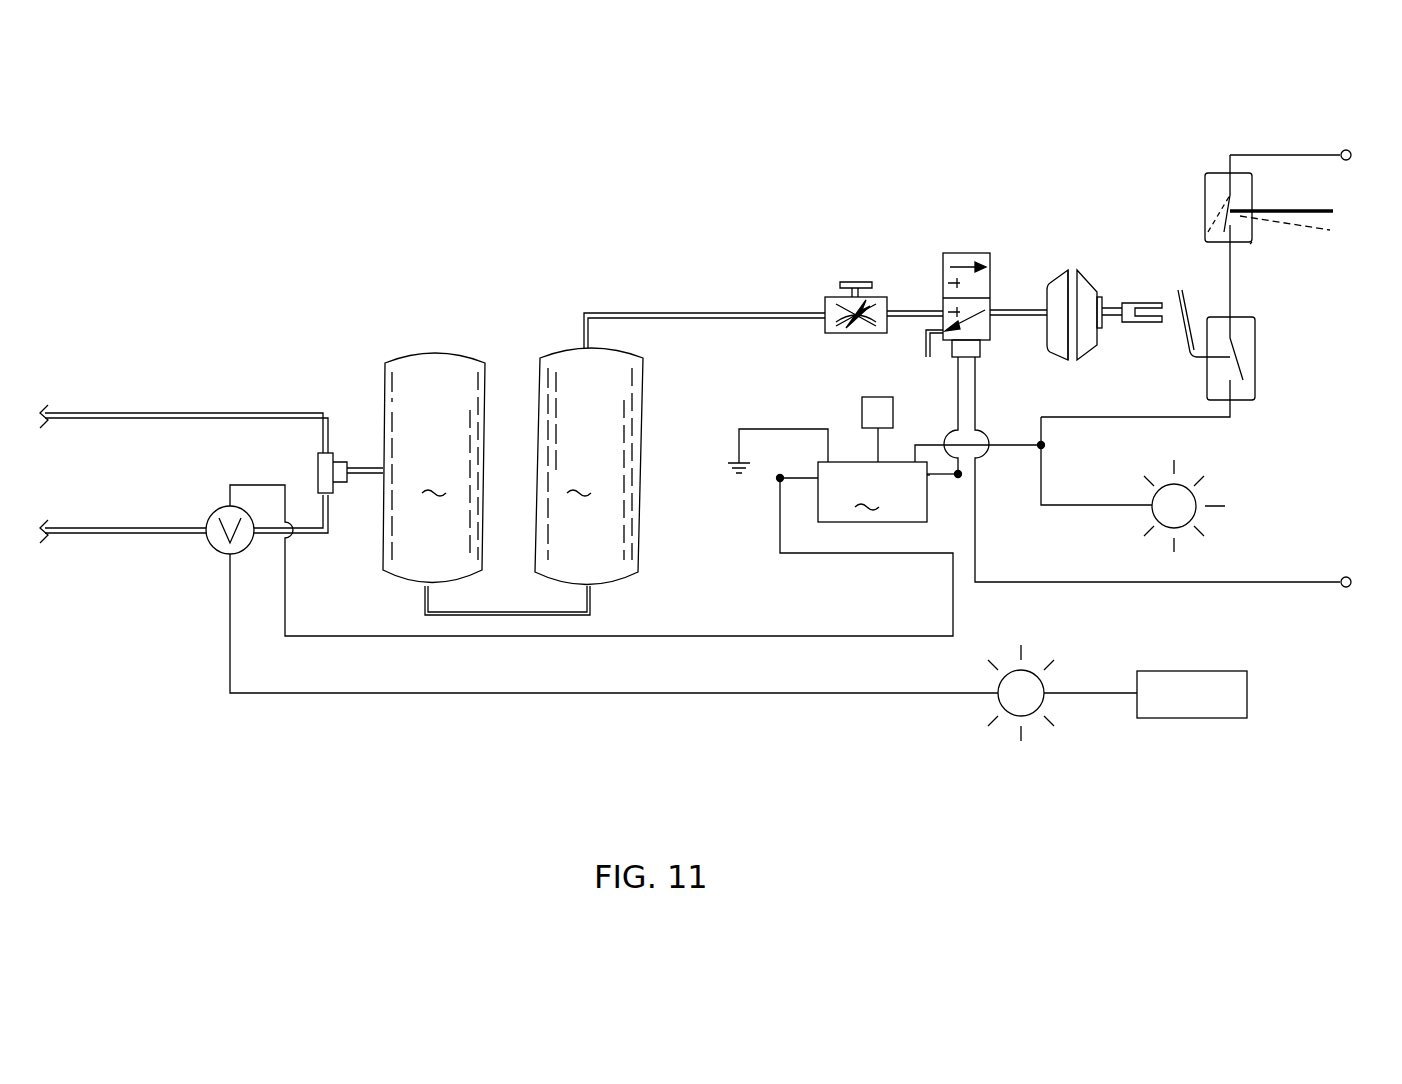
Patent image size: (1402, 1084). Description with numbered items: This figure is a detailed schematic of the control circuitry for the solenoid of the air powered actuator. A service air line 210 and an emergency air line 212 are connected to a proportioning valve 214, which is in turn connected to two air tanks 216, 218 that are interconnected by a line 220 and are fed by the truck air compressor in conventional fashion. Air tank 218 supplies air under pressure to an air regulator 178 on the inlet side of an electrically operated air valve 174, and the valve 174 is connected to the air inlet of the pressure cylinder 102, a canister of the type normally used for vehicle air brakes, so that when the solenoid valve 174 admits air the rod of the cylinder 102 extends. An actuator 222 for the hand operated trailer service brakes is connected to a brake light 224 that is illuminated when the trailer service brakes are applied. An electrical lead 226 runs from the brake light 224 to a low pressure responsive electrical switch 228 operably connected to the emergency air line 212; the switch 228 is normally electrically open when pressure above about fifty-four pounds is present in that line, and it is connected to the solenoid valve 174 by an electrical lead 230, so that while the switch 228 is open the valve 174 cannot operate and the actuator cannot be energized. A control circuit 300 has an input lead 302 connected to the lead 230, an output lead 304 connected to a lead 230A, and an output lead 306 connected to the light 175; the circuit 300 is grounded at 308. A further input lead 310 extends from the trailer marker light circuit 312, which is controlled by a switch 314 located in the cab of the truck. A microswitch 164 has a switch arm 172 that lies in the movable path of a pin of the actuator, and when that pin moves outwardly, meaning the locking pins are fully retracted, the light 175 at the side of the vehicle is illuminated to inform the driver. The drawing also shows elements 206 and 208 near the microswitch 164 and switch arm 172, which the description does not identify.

The pressure cylinder 102 is at (1046, 341).
The microswitch 164 is at (1260, 392).
The switch arm 172 is at (1180, 295).
The electrically operated air valve 174 is at (990, 253).
The light 175 is at (1180, 498).
The air regulator 178 is at (860, 290).
The pedal arm 206 is at (1257, 245).
The brake pedal switch 208 is at (1292, 208).
The service air line 210 is at (120, 412).
The emergency air line 212 is at (80, 527).
The proportioning valve 214 is at (330, 452).
The air tank 216 is at (434, 468).
The air tank 218 is at (589, 466).
The line 220 is at (460, 607).
The actuator for hand operated trailer service brakes 222 is at (1187, 683).
The brake light 224 is at (1020, 685).
The electrical lead 226 is at (793, 705).
The low pressure responsive electrical switch 228 is at (218, 548).
The electrical lead 230 is at (775, 634).
The lead 230A is at (955, 385).
The control circuit 300 is at (872, 492).
The input lead 302 is at (790, 472).
The output lead 304 is at (940, 482).
The output lead 306 is at (1008, 455).
The ground 308 is at (737, 478).
The input lead 310 is at (878, 445).
The trailer marker light circuit 312 is at (862, 400).
The switch 314 is at (876, 389).